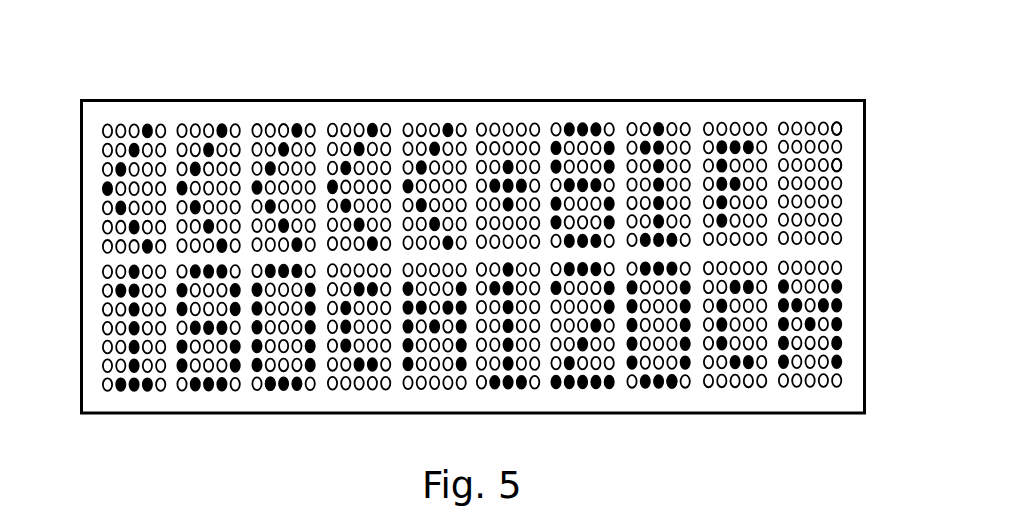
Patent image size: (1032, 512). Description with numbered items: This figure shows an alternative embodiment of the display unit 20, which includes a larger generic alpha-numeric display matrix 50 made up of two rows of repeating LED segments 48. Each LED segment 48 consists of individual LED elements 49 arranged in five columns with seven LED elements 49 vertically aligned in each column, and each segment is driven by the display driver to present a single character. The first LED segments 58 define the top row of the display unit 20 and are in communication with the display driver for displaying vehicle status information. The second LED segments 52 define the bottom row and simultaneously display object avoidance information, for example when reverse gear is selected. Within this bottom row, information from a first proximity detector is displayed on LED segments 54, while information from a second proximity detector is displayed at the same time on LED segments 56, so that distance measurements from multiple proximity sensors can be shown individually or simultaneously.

The display unit 20 is at (660, 100).
The LED segment 48 is at (846, 129).
The LED element 49 is at (842, 161).
The alpha-numeric display matrix 50 is at (850, 251).
The second LED segments 52 is at (88, 322).
The LED segments for first proximity detector 54 is at (272, 394).
The LED segments for second proximity detector 56 is at (671, 396).
The first LED segments 58 is at (90, 159).